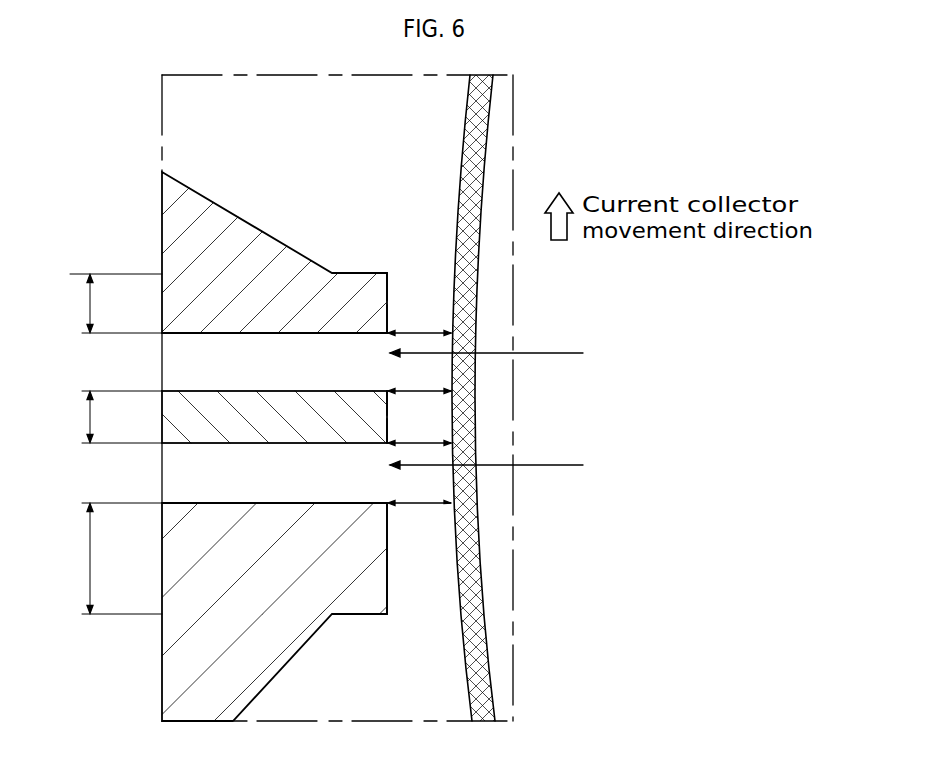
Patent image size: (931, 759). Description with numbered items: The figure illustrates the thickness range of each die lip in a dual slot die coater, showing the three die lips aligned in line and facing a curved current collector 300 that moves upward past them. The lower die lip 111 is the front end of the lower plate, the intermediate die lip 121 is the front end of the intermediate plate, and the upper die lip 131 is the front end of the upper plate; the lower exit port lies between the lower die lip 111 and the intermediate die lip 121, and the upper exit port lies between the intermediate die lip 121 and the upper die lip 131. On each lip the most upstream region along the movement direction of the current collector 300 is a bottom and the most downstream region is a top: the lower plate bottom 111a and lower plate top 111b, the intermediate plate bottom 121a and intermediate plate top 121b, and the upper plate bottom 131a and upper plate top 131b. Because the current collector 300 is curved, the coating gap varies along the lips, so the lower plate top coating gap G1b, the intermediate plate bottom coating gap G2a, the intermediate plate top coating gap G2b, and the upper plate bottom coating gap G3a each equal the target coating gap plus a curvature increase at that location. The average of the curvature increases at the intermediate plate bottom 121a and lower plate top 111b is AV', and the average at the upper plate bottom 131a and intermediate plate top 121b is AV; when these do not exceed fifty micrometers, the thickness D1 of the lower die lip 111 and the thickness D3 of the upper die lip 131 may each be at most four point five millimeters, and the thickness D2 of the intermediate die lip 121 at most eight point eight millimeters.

The current collector 300 is at (468, 118).
The upper die lip 131 is at (375, 300).
The upper plate bottom 131a is at (382, 337).
The upper plate top 131b is at (388, 270).
The intermediate die lip 121 is at (380, 418).
The intermediate plate bottom 121a is at (382, 446).
The intermediate plate top 121b is at (382, 388).
The lower die lip 111 is at (367, 578).
The lower plate bottom 111a is at (389, 618).
The lower plate top 111b is at (382, 500).
The upper plate bottom coating gap G3a is at (419, 322).
The intermediate plate top coating gap G2b is at (419, 380).
The intermediate plate bottom coating gap G2a is at (419, 431).
The lower plate top coating gap G1b is at (419, 491).
The average curvature increase at upper plate bottom and intermediate plate top AV is at (503, 353).
The average curvature increase at intermediate plate bottom and lower plate top AV' is at (506, 465).
The thickness of the lower die lip D1 is at (109, 558).
The thickness of the intermediate die lip D2 is at (109, 417).
The thickness of the upper die lip D3 is at (109, 303).